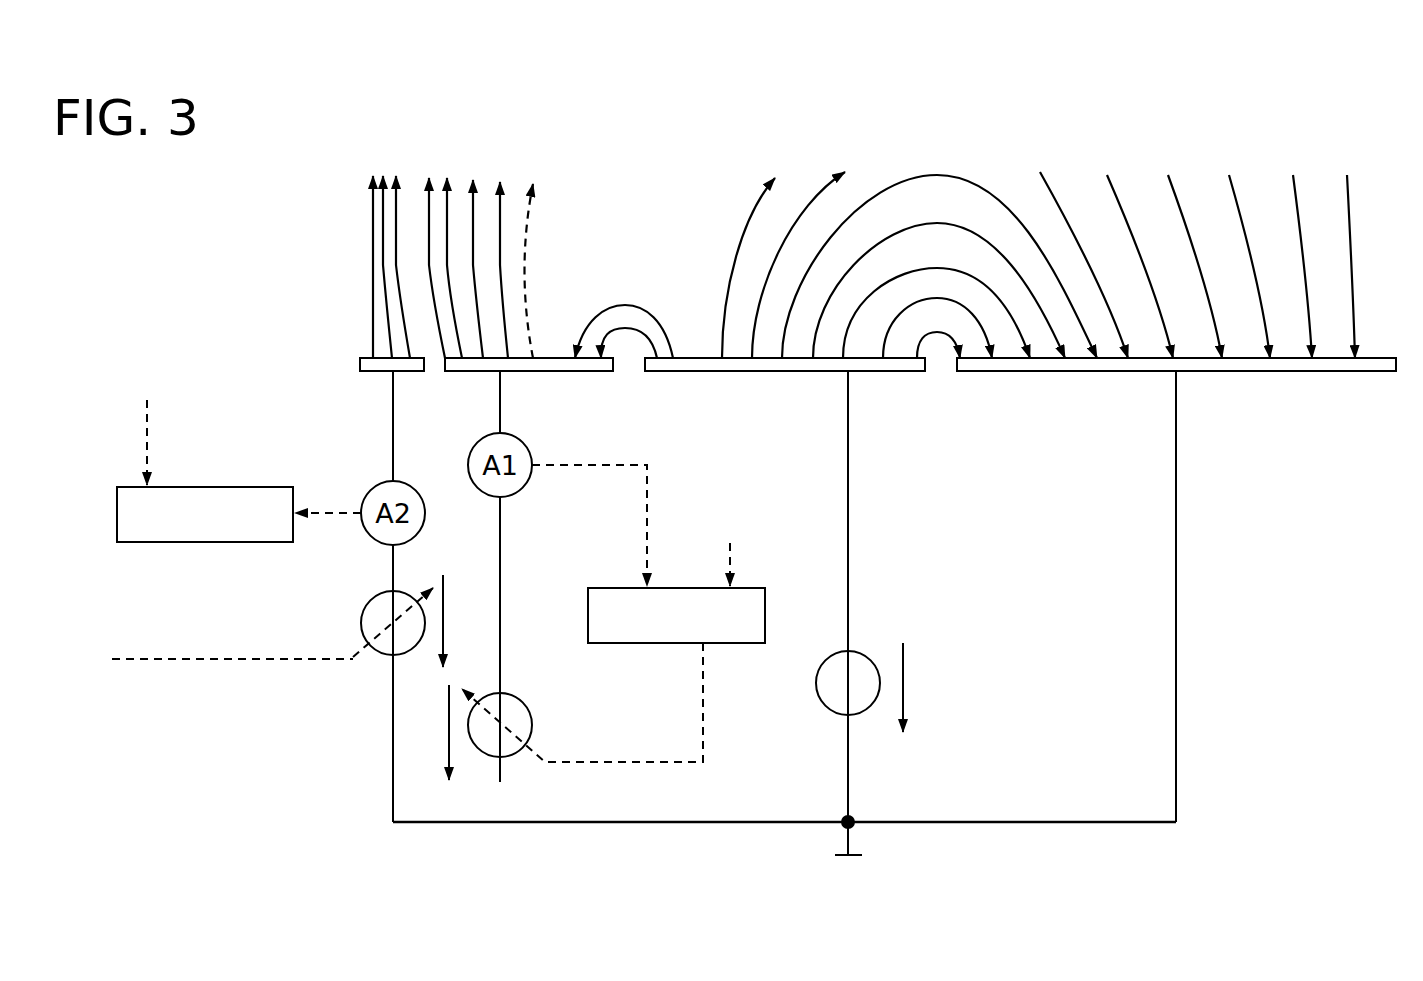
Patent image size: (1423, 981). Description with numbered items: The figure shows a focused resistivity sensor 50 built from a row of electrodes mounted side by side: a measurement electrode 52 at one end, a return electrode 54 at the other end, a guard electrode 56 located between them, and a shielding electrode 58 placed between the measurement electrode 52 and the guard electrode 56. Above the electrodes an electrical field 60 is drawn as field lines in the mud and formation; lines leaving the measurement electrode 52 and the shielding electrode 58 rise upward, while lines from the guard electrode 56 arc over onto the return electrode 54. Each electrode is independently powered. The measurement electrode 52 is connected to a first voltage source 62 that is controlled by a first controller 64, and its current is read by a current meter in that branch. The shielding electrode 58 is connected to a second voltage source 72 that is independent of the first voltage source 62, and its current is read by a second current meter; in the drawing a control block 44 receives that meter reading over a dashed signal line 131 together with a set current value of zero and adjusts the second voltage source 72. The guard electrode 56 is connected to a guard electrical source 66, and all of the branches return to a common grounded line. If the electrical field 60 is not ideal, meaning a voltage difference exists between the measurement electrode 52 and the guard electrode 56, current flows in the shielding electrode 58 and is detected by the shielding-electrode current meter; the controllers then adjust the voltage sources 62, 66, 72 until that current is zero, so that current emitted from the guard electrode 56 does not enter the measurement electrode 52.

The focused resistivity sensor 50 is at (815, 221).
The measurement electrode 52 is at (377, 371).
The return electrode 54 is at (1085, 371).
The guard electrode 56 is at (773, 371).
The shielding electrode 58 is at (558, 371).
The electrical field 60 is at (755, 210).
The first voltage source 62 is at (373, 653).
The first controller 64 is at (239, 471).
The guard electrical source 66 is at (943, 668).
The second voltage source 72 is at (520, 693).
The controller 44 is at (698, 558).
The control signal line 131 is at (589, 525).